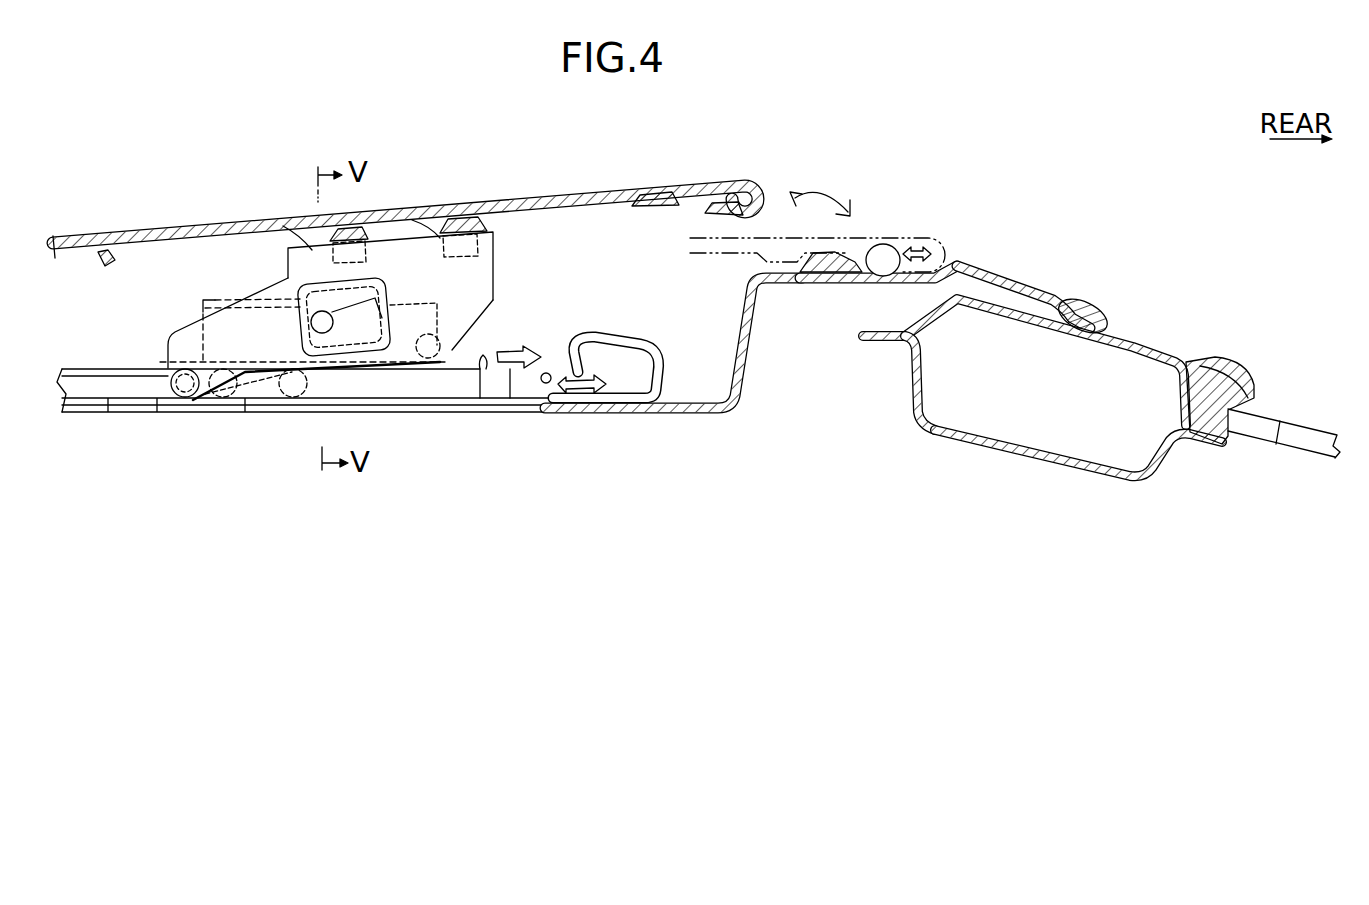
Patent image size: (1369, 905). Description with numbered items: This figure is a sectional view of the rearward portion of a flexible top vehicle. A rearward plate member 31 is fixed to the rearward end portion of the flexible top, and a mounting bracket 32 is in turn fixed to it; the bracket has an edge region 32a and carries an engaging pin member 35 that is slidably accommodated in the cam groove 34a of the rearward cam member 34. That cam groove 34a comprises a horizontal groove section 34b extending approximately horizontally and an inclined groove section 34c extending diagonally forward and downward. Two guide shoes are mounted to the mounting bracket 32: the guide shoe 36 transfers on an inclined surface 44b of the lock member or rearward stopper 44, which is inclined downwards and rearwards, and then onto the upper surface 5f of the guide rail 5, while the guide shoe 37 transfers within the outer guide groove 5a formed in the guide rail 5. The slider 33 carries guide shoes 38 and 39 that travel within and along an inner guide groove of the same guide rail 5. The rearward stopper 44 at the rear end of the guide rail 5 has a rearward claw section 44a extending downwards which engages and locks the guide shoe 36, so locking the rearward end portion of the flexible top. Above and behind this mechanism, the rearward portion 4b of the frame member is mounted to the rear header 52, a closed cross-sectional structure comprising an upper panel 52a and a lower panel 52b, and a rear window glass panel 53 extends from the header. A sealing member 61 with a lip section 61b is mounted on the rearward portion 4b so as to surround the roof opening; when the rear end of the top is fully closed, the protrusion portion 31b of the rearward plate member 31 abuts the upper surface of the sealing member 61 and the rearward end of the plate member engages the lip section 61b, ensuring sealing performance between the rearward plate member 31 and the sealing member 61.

The rearward portion of the frame member 4b is at (1002, 271).
The guide rail 5 is at (120, 368).
The outer guide groove 5a is at (109, 400).
The upper surface of the guide rail 5f is at (482, 366).
The rearward plate member 31 is at (166, 263).
The protrusion portion 31b is at (636, 214).
The mounting bracket 32 is at (493, 272).
The slide bracket inclined edge 32a is at (497, 306).
The slider 33 is at (213, 299).
The rearward cam member 34 is at (362, 286).
The cam groove 34a is at (370, 368).
The horizontal groove section 34b is at (382, 288).
The inclined groove section 34c is at (298, 290).
The engaging pin member 35 is at (302, 328).
The guide shoe 36 is at (470, 348).
The guide shoe 37 is at (166, 398).
The guide shoe 38 is at (302, 416).
The guide shoe 39 is at (243, 400).
The rearward stopper 44 is at (653, 390).
The rearward claw section 44a is at (570, 352).
The inclined surface 44b is at (546, 386).
The rear header 52 is at (1142, 478).
The upper panel 52a is at (1136, 345).
The lower panel 52b is at (998, 469).
The rear window glass panel 53 is at (1290, 422).
The sealing member 61 is at (797, 276).
The lip section 61b is at (866, 250).